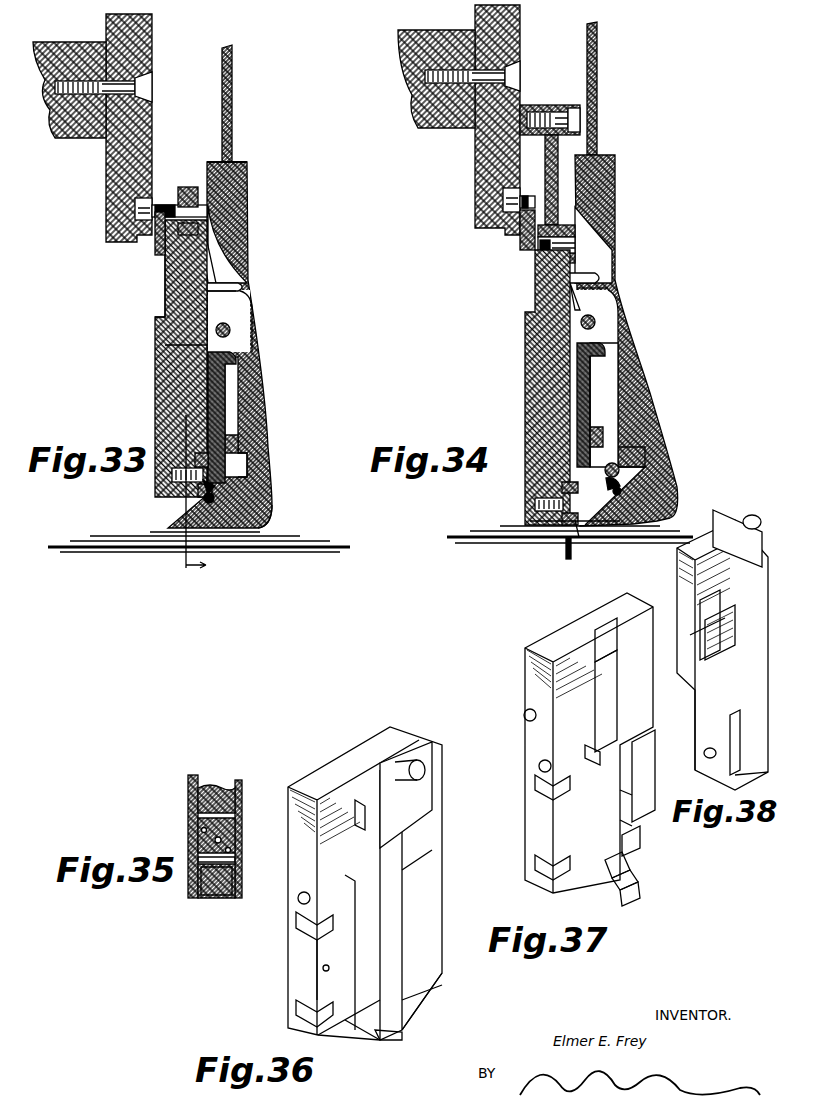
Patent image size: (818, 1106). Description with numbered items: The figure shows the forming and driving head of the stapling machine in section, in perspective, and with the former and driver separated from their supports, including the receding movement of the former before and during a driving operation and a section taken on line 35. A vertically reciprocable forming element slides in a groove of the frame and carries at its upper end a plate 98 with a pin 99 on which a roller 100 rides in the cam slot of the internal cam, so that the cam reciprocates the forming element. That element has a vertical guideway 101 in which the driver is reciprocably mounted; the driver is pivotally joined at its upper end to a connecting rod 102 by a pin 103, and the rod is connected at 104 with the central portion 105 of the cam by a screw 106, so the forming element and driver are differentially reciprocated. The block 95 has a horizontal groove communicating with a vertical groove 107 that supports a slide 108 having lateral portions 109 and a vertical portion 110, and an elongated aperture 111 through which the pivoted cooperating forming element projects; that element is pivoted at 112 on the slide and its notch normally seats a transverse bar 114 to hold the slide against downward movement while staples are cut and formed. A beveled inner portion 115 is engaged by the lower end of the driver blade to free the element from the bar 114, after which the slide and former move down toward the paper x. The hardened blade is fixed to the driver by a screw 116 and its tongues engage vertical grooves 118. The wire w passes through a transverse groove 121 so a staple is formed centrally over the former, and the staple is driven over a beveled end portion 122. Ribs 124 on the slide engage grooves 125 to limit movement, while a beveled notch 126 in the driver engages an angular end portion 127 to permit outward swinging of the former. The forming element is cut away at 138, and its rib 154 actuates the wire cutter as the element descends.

In FIG. 33, the block 95 is at (250, 188).
In FIG. 33, the plate 98 is at (158, 245).
In FIG. 33, the pin 99 is at (185, 172).
In FIG. 33, the roller 100 is at (138, 208).
In FIG. 36, the vertical guideway 101 is at (415, 862).
In FIG. 33, the connecting rod 102 is at (232, 192).
In FIG. 34, the pin 103 is at (566, 239).
In FIG. 34, the connection 104 is at (540, 100).
In FIG. 34, the central portion of cam 105 is at (508, 50).
In FIG. 34, the screw 106 is at (578, 118).
In FIG. 36, the vertical groove 107 is at (340, 975).
In FIG. 33, the slide 108 is at (215, 395).
In FIG. 33, the lateral portions of slide 109 is at (170, 330).
In FIG. 34, the vertical portion of slide 110 is at (592, 404).
In FIG. 33, the elongated aperture 111 is at (232, 262).
In FIG. 33, the pivot axis 112 is at (230, 328).
In FIG. 33, the bar 114 is at (240, 420).
In FIG. 33, the beveled inner portion 115 is at (215, 486).
In FIG. 33, the screw 116 is at (172, 478).
In FIG. 33, the vertical grooves 118 is at (274, 520).
In FIG. 33, the transverse groove 121 is at (215, 505).
In FIG. 33, the beveled end portion 122 is at (190, 500).
In FIG. 36, the ribs 124 is at (358, 830).
In FIG. 33, the grooves 125 is at (200, 348).
In FIG. 33, the beveled notch 126 is at (214, 246).
In FIG. 33, the angular end portion 127 is at (250, 294).
In FIG. 38, the cut-away portion 138 is at (740, 720).
In FIG. 36, the rib 154 is at (405, 995).
In FIG. 33, the section line 35 is at (185, 420).
In FIG. 35, the wire w is at (236, 866).
In FIG. 33, the paper x is at (108, 556).